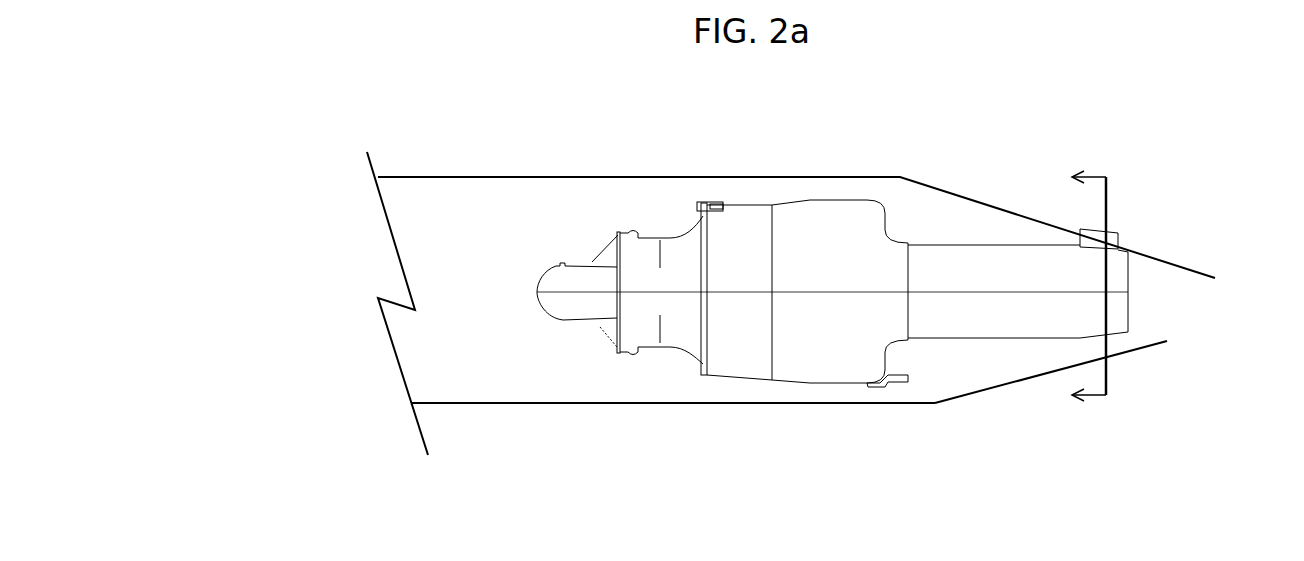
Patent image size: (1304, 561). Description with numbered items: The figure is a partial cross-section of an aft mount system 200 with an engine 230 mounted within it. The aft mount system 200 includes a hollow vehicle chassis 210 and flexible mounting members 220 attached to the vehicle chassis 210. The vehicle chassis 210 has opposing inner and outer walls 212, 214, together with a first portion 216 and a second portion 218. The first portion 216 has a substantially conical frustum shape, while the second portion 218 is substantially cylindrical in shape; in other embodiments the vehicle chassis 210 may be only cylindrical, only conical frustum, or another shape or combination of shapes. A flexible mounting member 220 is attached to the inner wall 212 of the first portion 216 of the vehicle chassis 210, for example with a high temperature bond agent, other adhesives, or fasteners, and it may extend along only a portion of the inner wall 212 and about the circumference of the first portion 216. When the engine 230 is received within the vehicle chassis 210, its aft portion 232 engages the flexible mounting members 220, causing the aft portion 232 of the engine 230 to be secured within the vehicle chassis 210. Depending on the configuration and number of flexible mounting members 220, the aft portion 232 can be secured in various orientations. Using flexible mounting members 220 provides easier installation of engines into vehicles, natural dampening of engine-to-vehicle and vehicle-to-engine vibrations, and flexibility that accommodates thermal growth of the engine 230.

The aft mount system 200 is at (302, 176).
The vehicle chassis 210 is at (493, 405).
The inner wall 212 is at (520, 178).
The outer wall 214 is at (638, 177).
The first portion 216 is at (978, 393).
The second portion 218 is at (565, 402).
The flexible mounting member 220 is at (1118, 242).
The engine 230 is at (888, 192).
The aft portion 232 is at (965, 245).